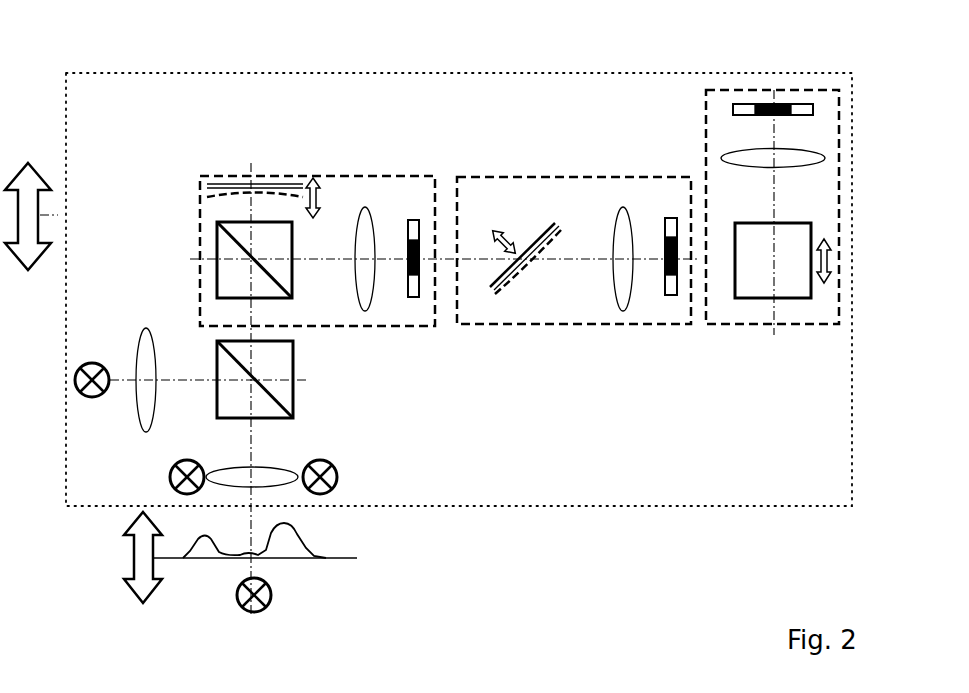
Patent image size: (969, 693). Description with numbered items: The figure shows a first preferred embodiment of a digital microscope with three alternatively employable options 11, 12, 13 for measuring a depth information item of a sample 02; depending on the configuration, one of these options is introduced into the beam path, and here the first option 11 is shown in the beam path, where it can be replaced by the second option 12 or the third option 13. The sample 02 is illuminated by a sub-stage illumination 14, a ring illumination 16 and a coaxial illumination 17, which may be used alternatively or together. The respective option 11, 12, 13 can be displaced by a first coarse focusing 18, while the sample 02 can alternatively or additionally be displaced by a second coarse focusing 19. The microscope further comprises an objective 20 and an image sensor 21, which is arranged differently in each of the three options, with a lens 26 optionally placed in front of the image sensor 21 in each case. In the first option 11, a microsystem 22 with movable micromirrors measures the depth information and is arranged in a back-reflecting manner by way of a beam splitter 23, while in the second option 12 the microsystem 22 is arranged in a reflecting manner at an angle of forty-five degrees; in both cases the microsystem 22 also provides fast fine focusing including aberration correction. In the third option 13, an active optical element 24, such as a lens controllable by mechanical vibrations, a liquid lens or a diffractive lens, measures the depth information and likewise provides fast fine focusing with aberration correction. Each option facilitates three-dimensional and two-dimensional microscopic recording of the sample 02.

The sample 02 is at (312, 550).
The first option 11 is at (363, 176).
The second option 12 is at (567, 177).
The third option 13 is at (839, 203).
The sub-stage illumination 14 is at (273, 600).
The ring illumination 16 is at (337, 469).
The coaxial illumination 17 is at (112, 331).
The first coarse focusing 18 is at (40, 252).
The second coarse focusing 19 is at (152, 593).
The objective 20 is at (275, 466).
The image sensor 21 is at (413, 297).
The microsystem with movable micromirrors 22 is at (278, 193).
The beam splitter 23 is at (216, 240).
The active optical element 24 is at (800, 298).
The lens 26 is at (367, 310).